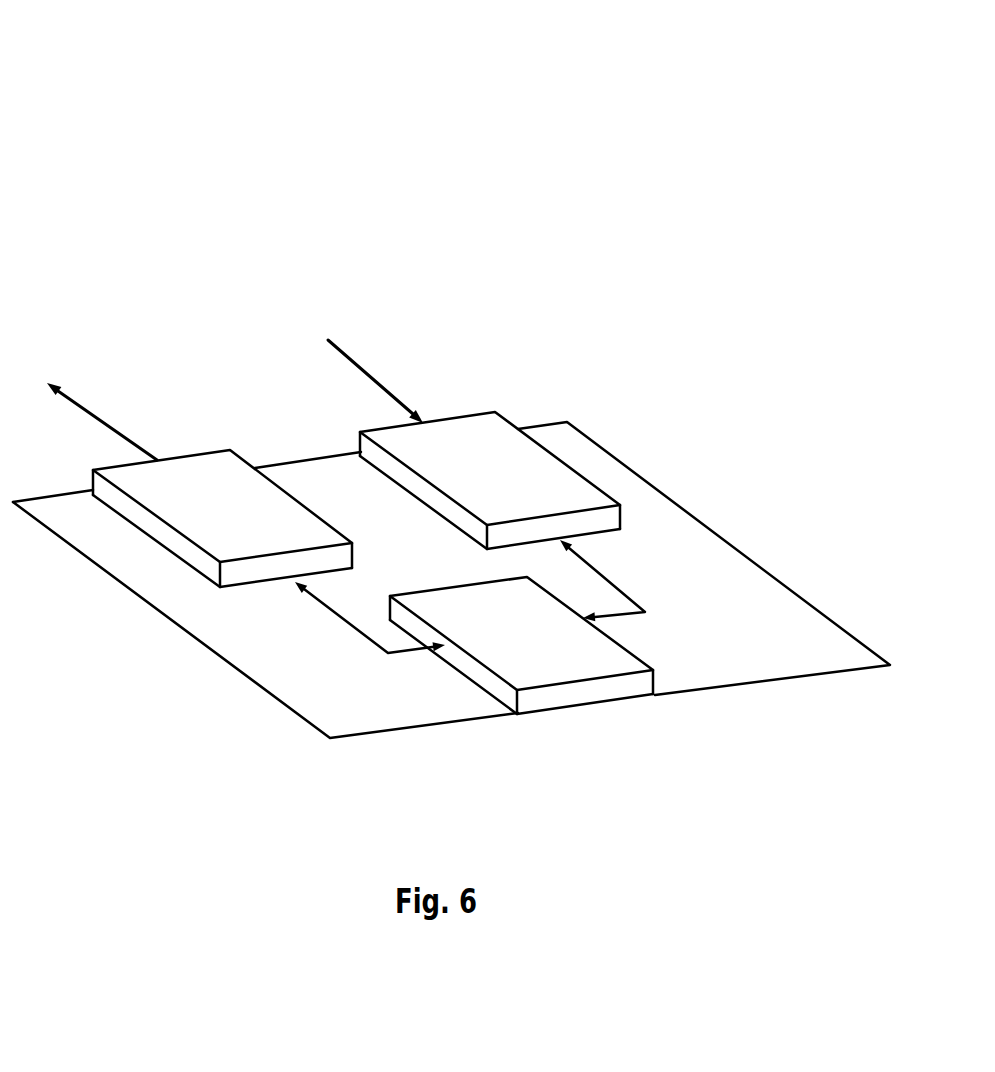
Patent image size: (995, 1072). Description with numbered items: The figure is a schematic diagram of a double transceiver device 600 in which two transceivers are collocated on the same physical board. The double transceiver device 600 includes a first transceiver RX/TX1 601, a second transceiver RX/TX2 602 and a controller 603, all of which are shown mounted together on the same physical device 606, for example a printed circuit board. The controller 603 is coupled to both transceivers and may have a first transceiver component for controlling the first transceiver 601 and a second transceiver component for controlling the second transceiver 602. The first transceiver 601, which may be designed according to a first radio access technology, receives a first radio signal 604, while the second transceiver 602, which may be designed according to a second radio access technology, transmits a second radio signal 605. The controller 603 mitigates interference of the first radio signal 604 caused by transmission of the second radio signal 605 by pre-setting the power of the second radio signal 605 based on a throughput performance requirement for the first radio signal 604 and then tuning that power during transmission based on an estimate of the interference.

The double transceiver device 600 is at (260, 108).
The first transceiver RX/TX1 601 is at (482, 428).
The second transceiver RX/TX2 602 is at (213, 468).
The controller 603 is at (457, 602).
The first radio signal 604 is at (370, 361).
The second radio signal 605 is at (100, 396).
The physical device 606 is at (669, 491).